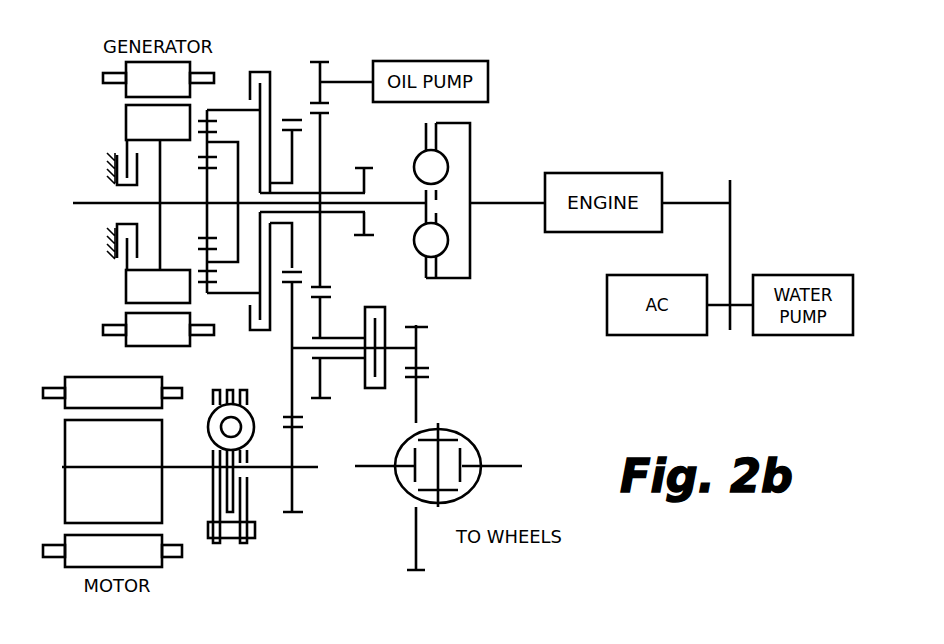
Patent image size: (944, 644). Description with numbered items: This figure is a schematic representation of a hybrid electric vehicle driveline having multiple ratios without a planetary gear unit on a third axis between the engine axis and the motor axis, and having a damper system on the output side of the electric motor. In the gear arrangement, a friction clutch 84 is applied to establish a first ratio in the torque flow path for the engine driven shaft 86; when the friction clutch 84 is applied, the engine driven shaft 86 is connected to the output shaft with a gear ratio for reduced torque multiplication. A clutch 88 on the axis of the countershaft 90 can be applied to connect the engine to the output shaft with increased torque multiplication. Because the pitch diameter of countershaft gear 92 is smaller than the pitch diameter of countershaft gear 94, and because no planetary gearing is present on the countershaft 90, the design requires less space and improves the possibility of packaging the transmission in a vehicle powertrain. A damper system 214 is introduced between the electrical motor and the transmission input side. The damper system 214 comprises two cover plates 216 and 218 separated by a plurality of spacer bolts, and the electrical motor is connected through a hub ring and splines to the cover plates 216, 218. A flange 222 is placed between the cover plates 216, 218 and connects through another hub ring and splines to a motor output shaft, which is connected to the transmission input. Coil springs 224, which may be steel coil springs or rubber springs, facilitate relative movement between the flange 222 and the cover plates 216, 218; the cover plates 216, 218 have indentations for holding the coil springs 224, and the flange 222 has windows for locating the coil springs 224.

The friction clutch 84 is at (261, 70).
The engine driven shaft 86 is at (381, 197).
The clutch 88 is at (421, 368).
The countershaft 90 is at (340, 360).
The countershaft gear 92 is at (421, 327).
The countershaft gear 94 is at (322, 400).
The damper system 214 is at (231, 539).
The cover plate 216 is at (250, 513).
The cover plate 218 is at (213, 513).
The flange 222 is at (232, 508).
The coil springs 224 is at (207, 427).